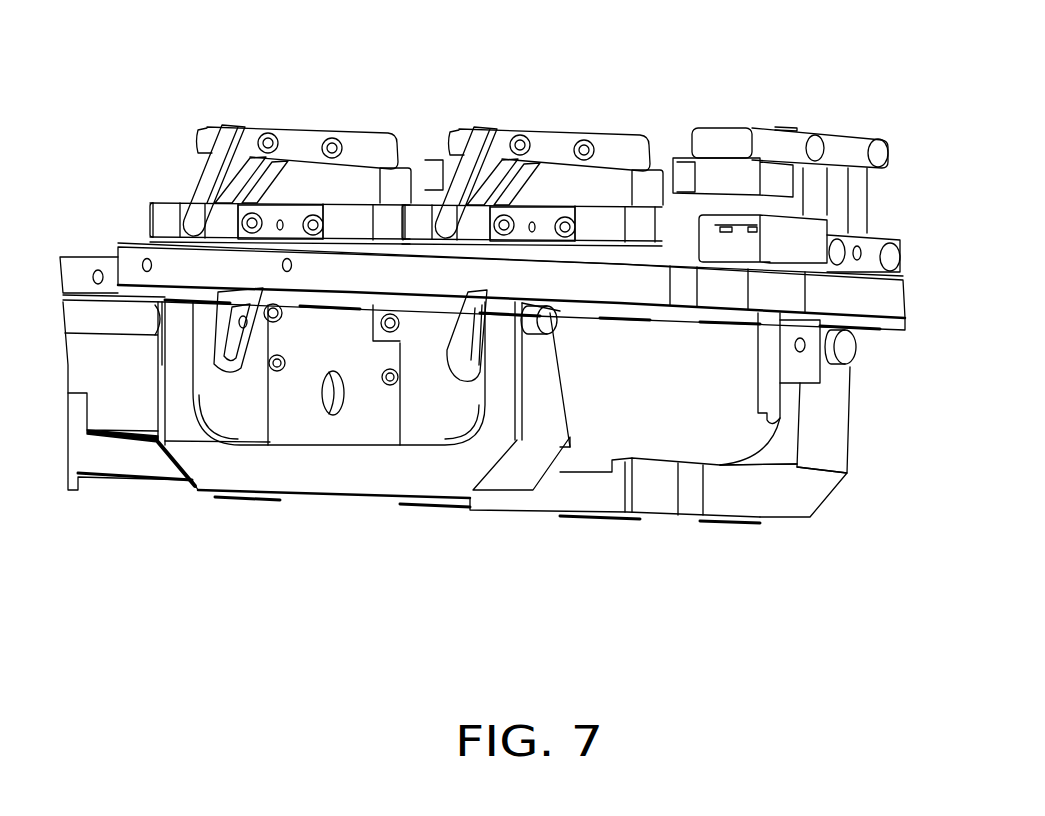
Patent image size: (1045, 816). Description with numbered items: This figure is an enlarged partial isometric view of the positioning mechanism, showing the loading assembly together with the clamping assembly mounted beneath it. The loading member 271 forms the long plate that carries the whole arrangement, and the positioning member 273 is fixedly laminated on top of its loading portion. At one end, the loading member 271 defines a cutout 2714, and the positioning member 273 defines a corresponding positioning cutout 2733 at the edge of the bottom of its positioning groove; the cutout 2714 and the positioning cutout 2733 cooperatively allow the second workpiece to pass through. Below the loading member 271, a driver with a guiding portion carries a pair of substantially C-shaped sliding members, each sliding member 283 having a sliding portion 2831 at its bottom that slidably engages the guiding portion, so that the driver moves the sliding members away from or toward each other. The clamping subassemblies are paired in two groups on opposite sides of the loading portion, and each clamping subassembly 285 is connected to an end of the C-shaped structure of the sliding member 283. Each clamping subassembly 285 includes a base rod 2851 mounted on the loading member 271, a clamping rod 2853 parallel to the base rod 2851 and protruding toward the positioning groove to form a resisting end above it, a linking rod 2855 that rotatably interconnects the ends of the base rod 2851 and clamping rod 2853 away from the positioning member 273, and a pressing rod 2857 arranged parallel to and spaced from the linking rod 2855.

The loading member 271 is at (360, 258).
The cutout 2714 is at (712, 285).
The positioning member 273 is at (754, 323).
The positioning cutout 2733 is at (722, 240).
The sliding member 283 is at (195, 497).
The sliding portion 2831 is at (325, 470).
The clamping subassembly 285 is at (384, 143).
The base rod 2851 is at (293, 220).
The clamping rod 2853 is at (290, 140).
The linking rod 2855 is at (212, 177).
The pressing rod 2857 is at (223, 327).